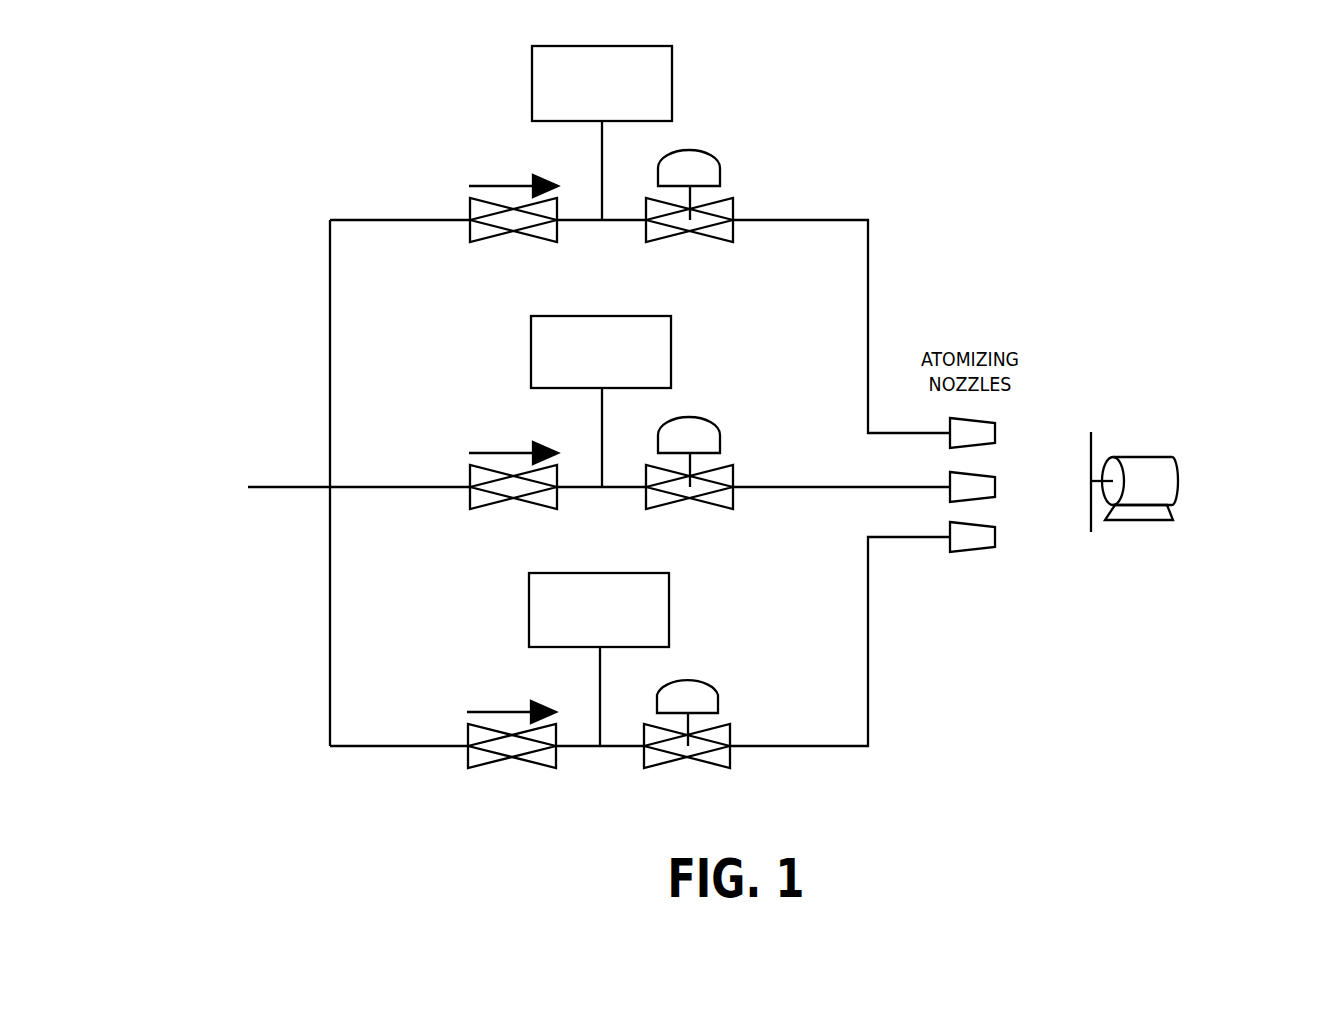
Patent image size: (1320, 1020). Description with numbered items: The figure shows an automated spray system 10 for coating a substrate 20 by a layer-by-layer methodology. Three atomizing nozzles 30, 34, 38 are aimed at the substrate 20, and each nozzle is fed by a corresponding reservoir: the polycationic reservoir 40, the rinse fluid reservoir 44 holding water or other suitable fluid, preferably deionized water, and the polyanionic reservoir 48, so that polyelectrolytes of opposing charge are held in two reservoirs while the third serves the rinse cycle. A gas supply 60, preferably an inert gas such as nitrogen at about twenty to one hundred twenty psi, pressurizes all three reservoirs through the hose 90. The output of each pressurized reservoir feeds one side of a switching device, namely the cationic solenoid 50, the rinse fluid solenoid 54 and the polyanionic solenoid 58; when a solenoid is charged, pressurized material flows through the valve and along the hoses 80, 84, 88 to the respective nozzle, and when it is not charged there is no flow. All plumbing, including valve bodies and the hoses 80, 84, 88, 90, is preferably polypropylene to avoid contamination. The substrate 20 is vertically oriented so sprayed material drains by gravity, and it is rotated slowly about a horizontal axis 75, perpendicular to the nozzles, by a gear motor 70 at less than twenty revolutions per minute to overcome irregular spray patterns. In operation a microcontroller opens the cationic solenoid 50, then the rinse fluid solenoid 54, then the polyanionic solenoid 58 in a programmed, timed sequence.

The automated spray system 10 is at (1008, 114).
The substrate 20 is at (1073, 536).
The atomizing nozzle 30 is at (995, 421).
The atomizing nozzle 34 is at (995, 476).
The atomizing nozzle 38 is at (995, 526).
The polycationic reservoir 40 is at (672, 78).
The rinse fluid reservoir 44 is at (671, 361).
The polyanionic reservoir 48 is at (669, 617).
The cationic solenoid 50 is at (720, 175).
The rinse fluid solenoid 54 is at (720, 441).
The polyanionic solenoid 58 is at (718, 701).
The gas supply 60 is at (190, 535).
The gear motor 70 is at (1182, 496).
The horizontal axis 75 is at (1097, 478).
The hose 80 is at (823, 220).
The hose 84 is at (800, 487).
The hose 88 is at (792, 746).
The hose 90 is at (330, 410).